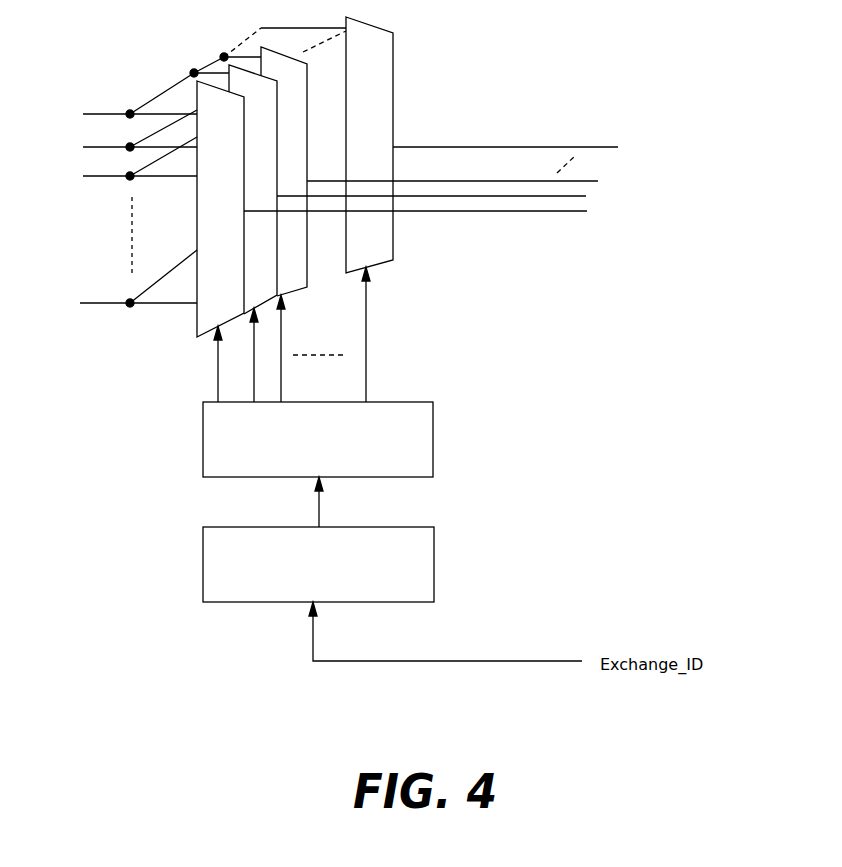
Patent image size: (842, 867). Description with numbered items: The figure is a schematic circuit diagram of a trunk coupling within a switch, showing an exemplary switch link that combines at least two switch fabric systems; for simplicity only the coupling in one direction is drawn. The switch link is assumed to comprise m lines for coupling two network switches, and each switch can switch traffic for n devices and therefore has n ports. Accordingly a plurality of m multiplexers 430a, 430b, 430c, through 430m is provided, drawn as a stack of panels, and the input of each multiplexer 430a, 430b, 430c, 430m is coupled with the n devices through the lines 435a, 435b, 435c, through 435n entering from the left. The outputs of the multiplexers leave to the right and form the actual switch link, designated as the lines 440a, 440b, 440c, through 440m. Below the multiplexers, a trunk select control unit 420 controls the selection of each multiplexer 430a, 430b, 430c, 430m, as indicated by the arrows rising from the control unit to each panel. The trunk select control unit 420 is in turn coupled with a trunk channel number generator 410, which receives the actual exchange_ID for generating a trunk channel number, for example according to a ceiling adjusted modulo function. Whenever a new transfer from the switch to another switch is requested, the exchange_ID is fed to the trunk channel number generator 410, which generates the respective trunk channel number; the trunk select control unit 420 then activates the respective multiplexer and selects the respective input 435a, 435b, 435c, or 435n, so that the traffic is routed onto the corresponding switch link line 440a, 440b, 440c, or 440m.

The trunk channel number generator 410 is at (342, 539).
The trunk select control unit 420 is at (341, 372).
The multiplexer 430a is at (189, 215).
The multiplexer 430b is at (203, 169).
The multiplexer 430c is at (272, 173).
The multiplexer 430m is at (362, 186).
The line 435a is at (119, 114).
The line 435b is at (119, 133).
The line 435c is at (119, 162).
The line 435n is at (118, 281).
The switch link 440a is at (440, 212).
The switch link 440b is at (461, 196).
The switch link 440c is at (481, 181).
The switch link 440m is at (534, 155).